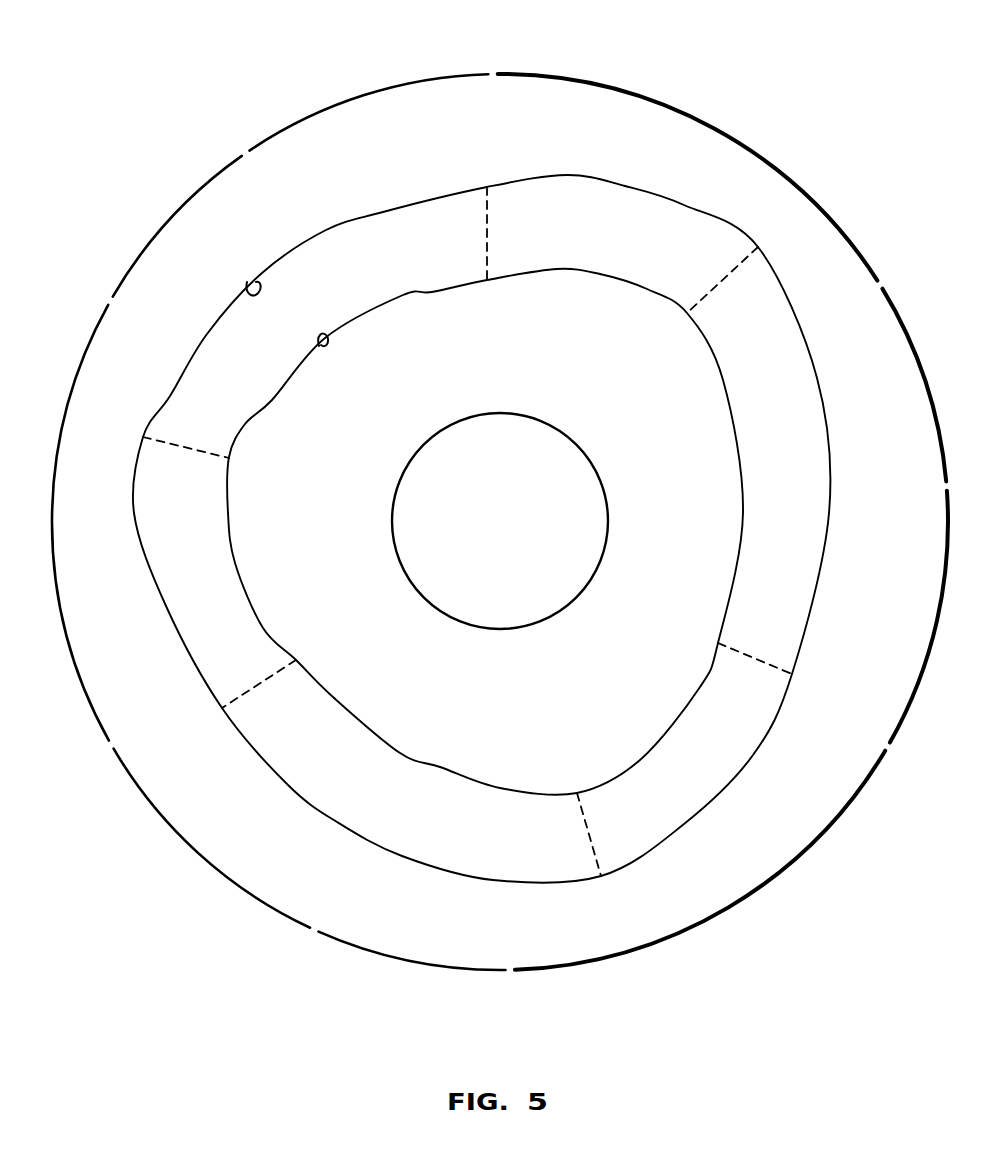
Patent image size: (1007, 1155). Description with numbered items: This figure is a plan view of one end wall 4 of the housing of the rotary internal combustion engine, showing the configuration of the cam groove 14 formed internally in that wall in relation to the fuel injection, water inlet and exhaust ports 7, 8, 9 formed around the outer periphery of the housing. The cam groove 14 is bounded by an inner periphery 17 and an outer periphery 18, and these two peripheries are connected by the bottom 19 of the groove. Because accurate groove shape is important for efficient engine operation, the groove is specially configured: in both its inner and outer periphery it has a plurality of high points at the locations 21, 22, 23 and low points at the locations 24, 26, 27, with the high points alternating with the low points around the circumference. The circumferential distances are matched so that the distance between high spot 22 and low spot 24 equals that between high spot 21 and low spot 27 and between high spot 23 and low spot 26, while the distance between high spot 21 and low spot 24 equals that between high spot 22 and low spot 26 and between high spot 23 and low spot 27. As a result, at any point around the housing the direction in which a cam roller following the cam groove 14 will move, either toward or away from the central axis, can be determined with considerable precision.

The end wall 4 is at (160, 250).
The port 7 is at (493, 71).
The port 8 is at (110, 300).
The port 9 is at (243, 152).
The cam groove 14 is at (403, 290).
The inner periphery 17 is at (322, 348).
The outer periphery 18 is at (248, 284).
The bottom 19 is at (240, 383).
The high point 21 is at (143, 437).
The high point 22 is at (758, 248).
The high point 23 is at (601, 876).
The low point 24 is at (487, 187).
The low point 26 is at (792, 674).
The low point 27 is at (222, 708).